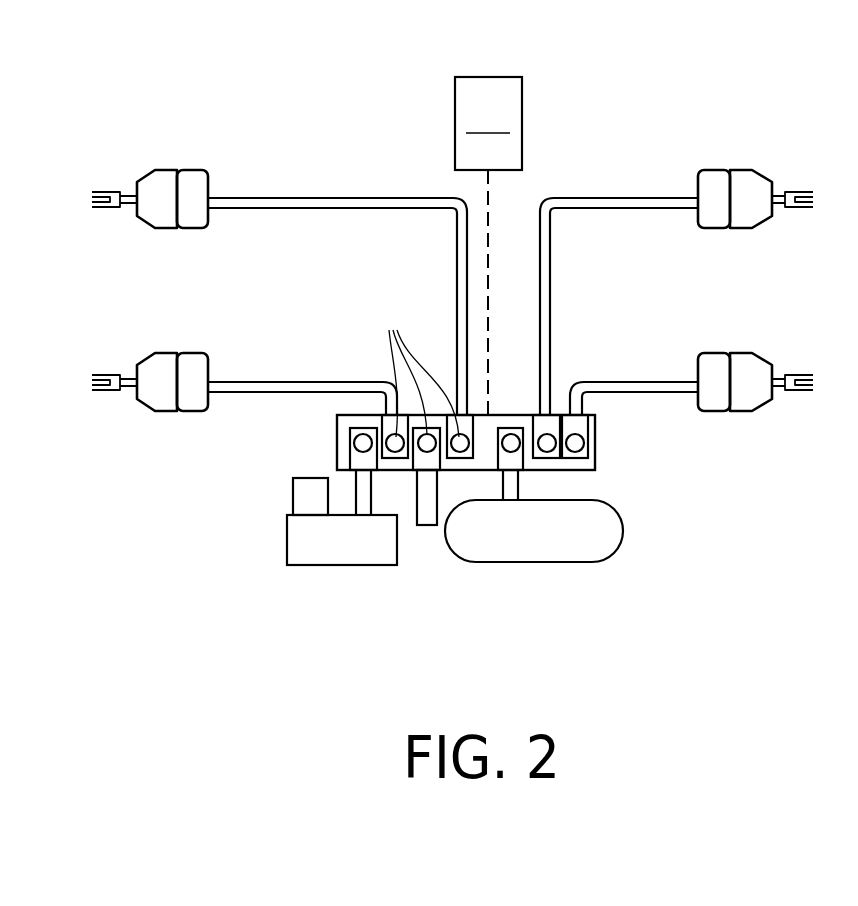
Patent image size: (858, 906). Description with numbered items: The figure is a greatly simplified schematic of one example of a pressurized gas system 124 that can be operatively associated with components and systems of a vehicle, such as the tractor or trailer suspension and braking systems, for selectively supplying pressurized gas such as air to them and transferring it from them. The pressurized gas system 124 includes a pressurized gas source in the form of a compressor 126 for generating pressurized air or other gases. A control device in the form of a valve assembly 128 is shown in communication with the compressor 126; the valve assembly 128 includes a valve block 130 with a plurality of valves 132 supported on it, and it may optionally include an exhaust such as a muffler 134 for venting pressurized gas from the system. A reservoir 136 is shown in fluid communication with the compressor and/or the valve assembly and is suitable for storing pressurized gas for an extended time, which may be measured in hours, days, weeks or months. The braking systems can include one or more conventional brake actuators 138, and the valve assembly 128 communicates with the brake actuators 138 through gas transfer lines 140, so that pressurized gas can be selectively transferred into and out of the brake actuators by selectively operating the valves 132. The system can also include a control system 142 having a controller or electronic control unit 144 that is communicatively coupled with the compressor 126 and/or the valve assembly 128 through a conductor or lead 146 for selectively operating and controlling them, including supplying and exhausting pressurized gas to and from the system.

The pressurized gas system 124 is at (243, 505).
The compressor 126 is at (338, 545).
The valve assembly 128 is at (330, 443).
The valve block 130 is at (595, 462).
The valves 132 is at (417, 367).
The muffler 134 is at (428, 522).
The reservoir 136 is at (543, 540).
The brake actuators 138 is at (152, 170).
The gas transfer lines 140 is at (300, 198).
The control system 142 is at (537, 58).
The electronic control unit 144 is at (488, 115).
The lead 146 is at (488, 205).